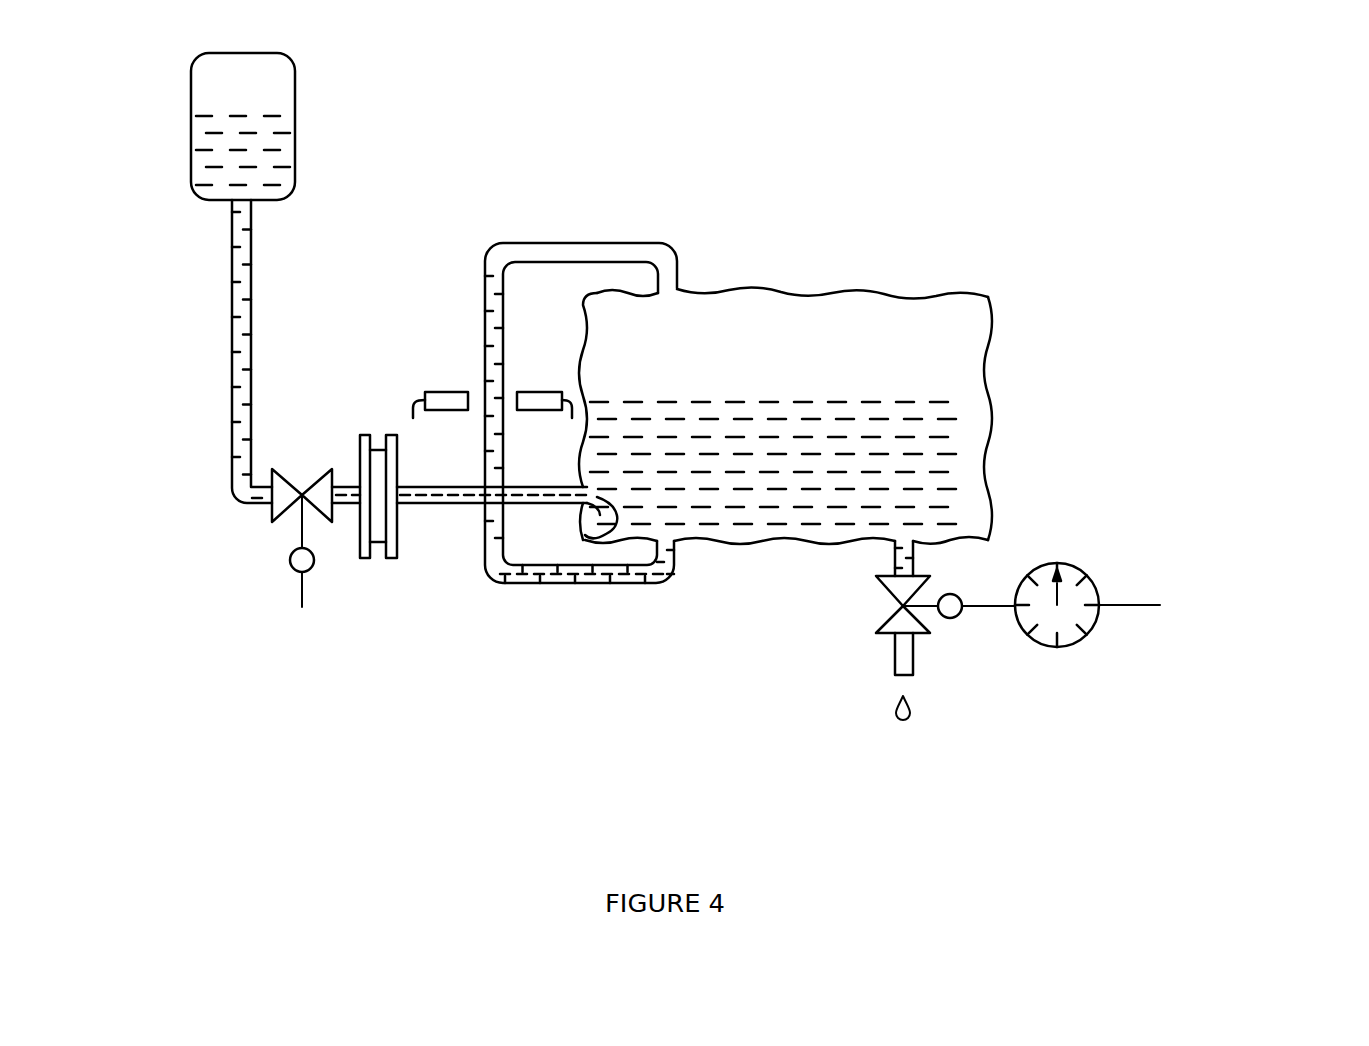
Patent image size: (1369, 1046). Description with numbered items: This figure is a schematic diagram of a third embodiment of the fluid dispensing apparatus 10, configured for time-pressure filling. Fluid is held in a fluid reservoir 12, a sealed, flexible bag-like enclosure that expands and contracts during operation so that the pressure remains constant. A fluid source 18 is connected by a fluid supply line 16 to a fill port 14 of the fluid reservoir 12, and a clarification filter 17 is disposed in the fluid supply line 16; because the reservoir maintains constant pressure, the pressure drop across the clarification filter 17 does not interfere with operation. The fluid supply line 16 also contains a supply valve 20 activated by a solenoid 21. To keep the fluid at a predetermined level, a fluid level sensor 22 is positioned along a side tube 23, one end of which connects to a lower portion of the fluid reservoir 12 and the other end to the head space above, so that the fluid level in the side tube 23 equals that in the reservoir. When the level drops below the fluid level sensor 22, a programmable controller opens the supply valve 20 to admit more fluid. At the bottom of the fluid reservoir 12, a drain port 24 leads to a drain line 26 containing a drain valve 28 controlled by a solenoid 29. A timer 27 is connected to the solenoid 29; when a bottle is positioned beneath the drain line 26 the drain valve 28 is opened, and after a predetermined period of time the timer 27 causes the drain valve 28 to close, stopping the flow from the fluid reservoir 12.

The dispensing apparatus 10 is at (968, 200).
The fluid reservoir 12 is at (837, 312).
The fill port 14 is at (588, 535).
The fluid supply line 16 is at (240, 302).
The clarification filter 17 is at (397, 528).
The fluid source 18 is at (278, 88).
The supply valve 20 is at (320, 488).
The solenoid 21 is at (290, 562).
The fluid level sensor 22 is at (445, 400).
The side tube 23 is at (580, 250).
The drain port 24 is at (907, 541).
The drain line 26 is at (905, 655).
The timer 27 is at (1095, 625).
The drain valve 28 is at (898, 625).
The solenoid 29 is at (950, 620).